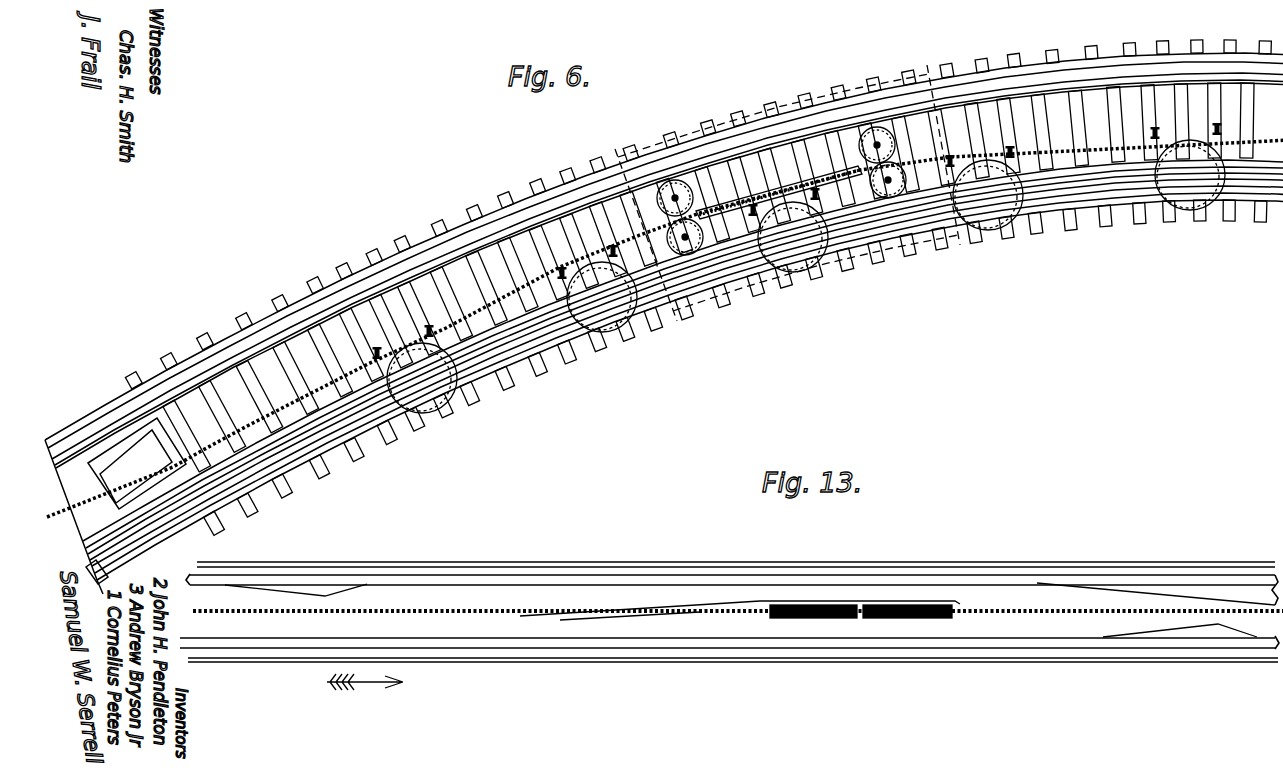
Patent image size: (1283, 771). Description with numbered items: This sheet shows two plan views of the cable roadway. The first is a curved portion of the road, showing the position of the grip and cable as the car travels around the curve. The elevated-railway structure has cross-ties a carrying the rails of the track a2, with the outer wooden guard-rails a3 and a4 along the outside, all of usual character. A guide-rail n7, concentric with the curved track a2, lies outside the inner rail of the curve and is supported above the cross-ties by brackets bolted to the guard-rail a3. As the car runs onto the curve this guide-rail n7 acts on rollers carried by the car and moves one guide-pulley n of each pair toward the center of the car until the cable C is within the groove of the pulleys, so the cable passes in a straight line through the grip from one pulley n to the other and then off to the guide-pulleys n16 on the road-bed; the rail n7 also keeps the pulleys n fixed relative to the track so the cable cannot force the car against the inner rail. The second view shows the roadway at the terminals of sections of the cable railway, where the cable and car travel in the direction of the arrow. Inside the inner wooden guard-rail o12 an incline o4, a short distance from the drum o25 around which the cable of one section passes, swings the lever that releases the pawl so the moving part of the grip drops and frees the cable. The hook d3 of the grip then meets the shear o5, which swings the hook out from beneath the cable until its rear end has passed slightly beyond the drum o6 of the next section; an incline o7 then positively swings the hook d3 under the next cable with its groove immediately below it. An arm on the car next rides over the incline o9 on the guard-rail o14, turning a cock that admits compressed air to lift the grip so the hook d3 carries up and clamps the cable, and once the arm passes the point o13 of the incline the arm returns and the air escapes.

In FIG. 6, the cross-ties a is at (664, 317).
In FIG. 6, the rails of the track a2 is at (465, 246).
In FIG. 13, the rails of the track a2 is at (704, 660).
In FIG. 6, the outer wooden guard-rail a3 is at (905, 228).
In FIG. 6, the outer wooden guard-rail a4 is at (728, 128).
In FIG. 6, the cable C is at (467, 308).
In FIG. 13, the cable C is at (1080, 616).
In FIG. 6, the guide-pulleys n is at (781, 191).
In FIG. 6, the guide-pulleys upon the road-bed n16 is at (806, 276).
In FIG. 6, the guide-rail n7 is at (527, 362).
In FIG. 6, the hook of the grip d3 is at (779, 192).
In FIG. 13, the incline o4 is at (337, 590).
In FIG. 13, the shear o5 is at (716, 607).
In FIG. 13, the drum o6 is at (895, 619).
In FIG. 13, the incline o7 is at (1112, 585).
In FIG. 13, the incline o9 is at (1200, 632).
In FIG. 13, the inner wooden guard-rail o12 is at (481, 582).
In FIG. 13, the point of the incline o13 is at (1218, 628).
In FIG. 13, the inner wooden guard-rail o14 is at (857, 640).
In FIG. 13, the drum o25 is at (792, 619).